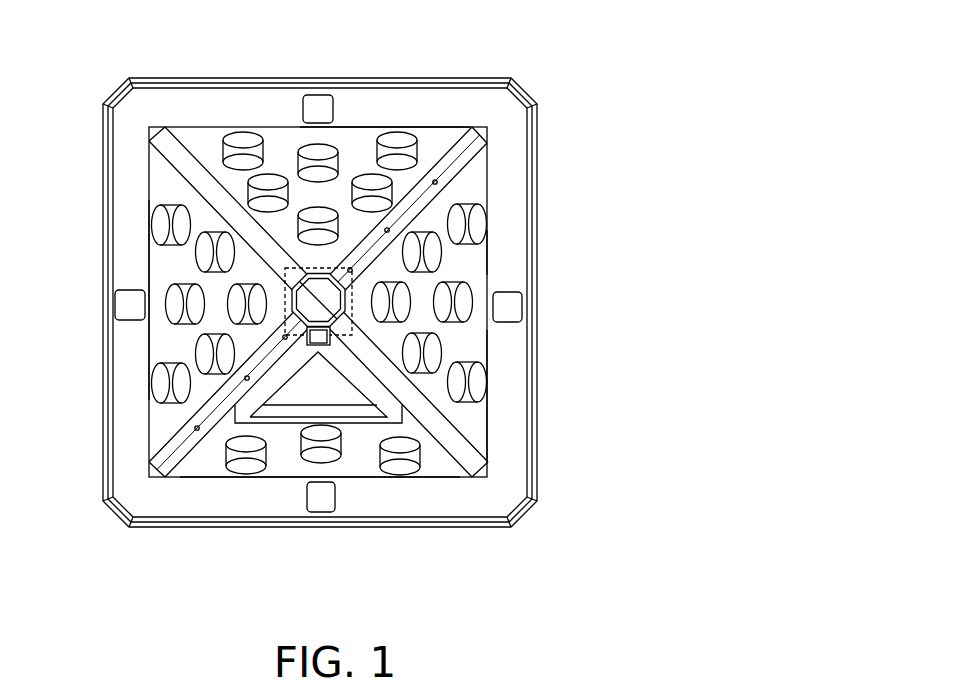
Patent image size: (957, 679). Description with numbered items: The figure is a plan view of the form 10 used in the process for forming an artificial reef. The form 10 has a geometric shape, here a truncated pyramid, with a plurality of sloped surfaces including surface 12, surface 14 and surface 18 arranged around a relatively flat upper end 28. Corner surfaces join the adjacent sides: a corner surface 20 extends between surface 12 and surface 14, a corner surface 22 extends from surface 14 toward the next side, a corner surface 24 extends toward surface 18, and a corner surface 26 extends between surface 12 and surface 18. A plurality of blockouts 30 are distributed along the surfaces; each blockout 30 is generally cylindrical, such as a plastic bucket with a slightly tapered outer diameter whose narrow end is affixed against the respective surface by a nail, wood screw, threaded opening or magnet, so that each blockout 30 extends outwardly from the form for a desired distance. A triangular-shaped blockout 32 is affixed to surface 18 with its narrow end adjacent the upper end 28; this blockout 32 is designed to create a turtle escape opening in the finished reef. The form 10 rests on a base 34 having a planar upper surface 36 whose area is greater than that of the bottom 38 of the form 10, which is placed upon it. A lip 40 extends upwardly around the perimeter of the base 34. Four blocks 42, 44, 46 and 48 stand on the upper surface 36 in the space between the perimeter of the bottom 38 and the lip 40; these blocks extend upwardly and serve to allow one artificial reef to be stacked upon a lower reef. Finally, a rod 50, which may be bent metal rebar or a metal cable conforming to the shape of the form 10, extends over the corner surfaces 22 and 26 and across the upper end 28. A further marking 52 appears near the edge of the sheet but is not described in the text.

The form 10 is at (485, 188).
The surface 12 is at (158, 265).
The surface 14 is at (358, 130).
The surface 18 is at (288, 468).
The corner surface 20 is at (173, 130).
The corner surface 22 is at (460, 130).
The corner surface 24 is at (455, 450).
The corner surface 26 is at (163, 452).
The upper end 28 is at (300, 270).
The blockouts 30 is at (235, 137).
The triangular-shaped blockout 32 is at (275, 423).
The base 34 is at (513, 380).
The upper surface 36 is at (513, 147).
The bottom 38 is at (435, 127).
The lip 40 is at (537, 445).
The block 42 is at (127, 312).
The block 44 is at (320, 500).
The block 46 is at (508, 307).
The block 48 is at (322, 102).
The rod 50 is at (483, 252).
The label 52 is at (599, 671).